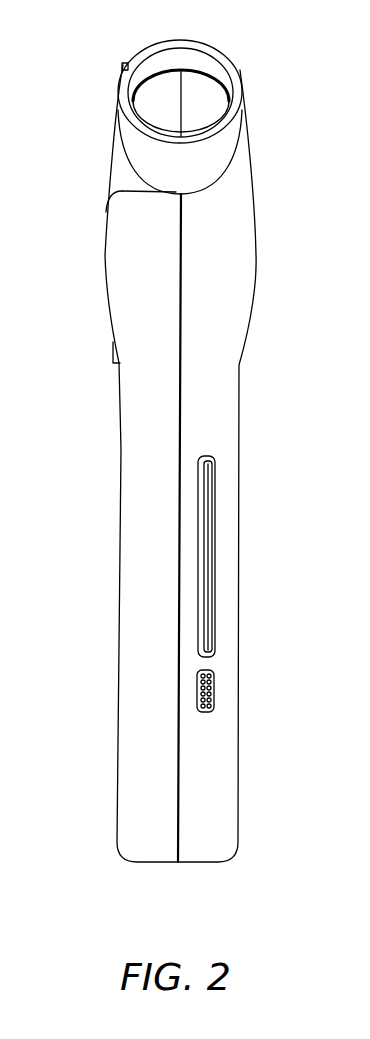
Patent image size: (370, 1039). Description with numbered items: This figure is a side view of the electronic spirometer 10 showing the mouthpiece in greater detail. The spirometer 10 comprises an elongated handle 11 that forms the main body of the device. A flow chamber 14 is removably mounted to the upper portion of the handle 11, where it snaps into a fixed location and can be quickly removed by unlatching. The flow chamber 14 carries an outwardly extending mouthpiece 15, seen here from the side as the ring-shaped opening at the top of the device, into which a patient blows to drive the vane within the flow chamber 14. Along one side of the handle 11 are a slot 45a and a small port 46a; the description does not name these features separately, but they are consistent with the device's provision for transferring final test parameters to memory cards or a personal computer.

The electronic spirometer 10 is at (175, 446).
The elongated handle 11 is at (148, 575).
The flow chamber 14 is at (107, 143).
The mouthpiece 15 is at (220, 50).
The slot 45a is at (213, 483).
The connector port 46a is at (212, 692).